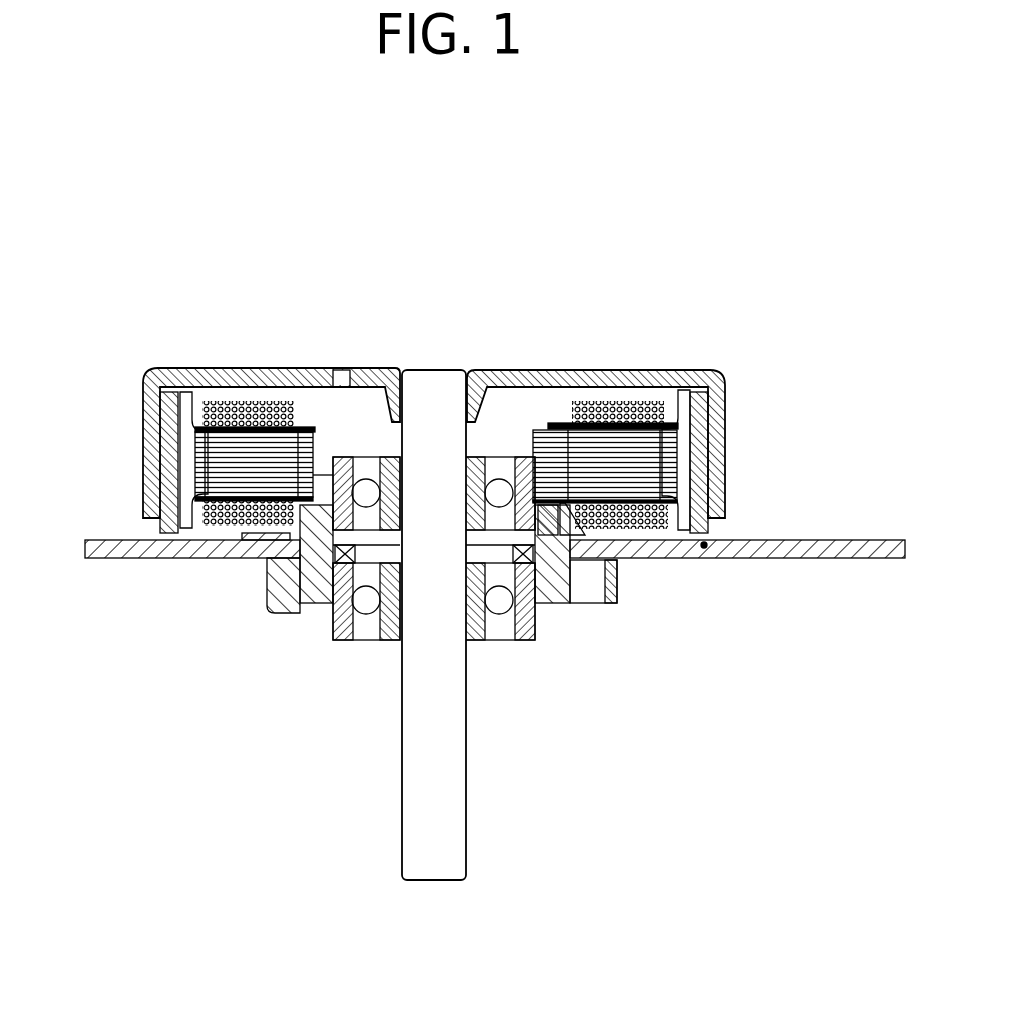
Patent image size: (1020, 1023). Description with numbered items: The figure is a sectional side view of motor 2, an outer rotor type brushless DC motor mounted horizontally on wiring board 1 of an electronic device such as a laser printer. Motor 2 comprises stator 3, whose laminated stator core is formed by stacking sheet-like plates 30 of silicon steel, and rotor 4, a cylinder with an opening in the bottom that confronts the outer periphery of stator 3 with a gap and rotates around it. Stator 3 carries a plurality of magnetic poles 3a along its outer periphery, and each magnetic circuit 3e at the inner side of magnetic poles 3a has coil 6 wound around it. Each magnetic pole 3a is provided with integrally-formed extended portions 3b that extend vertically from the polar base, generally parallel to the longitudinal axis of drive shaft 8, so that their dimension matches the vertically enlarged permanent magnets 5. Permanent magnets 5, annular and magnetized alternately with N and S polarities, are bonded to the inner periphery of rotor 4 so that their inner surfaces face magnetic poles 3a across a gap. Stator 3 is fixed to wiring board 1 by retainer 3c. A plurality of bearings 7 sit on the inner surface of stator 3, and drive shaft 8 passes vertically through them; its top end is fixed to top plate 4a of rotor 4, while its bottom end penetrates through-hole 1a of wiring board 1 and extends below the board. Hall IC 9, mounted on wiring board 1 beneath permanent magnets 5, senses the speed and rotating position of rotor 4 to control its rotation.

The wiring board 1 is at (885, 545).
The through-hole 1a is at (267, 565).
The motor 2 is at (478, 388).
The stator 3 is at (441, 463).
The magnetic poles 3a is at (143, 452).
The extended portions 3b is at (193, 397).
The retainer 3c is at (553, 593).
The magnetic circuits 3e is at (640, 490).
The rotor 4 is at (478, 372).
The top plate 4a is at (341, 378).
The permanent magnets 5 is at (723, 398).
The coil 6 is at (617, 407).
The bearings 7 is at (366, 475).
The drive shaft 8 is at (424, 400).
The Hall IC 9 is at (710, 560).
The sheet-like plates 30 is at (435, 544).